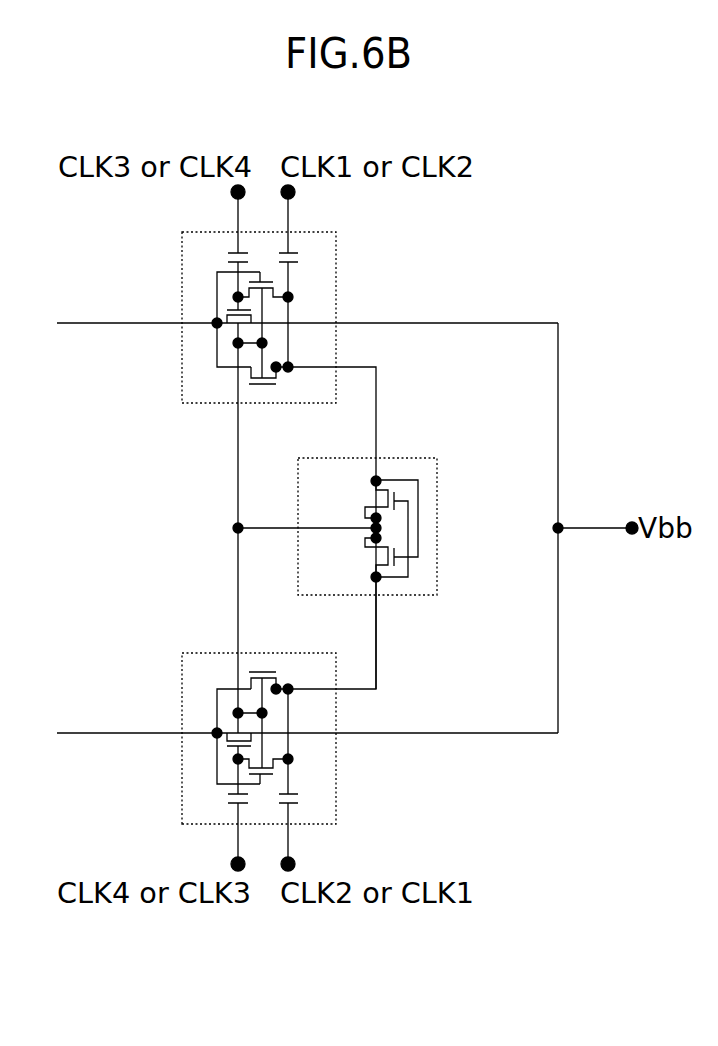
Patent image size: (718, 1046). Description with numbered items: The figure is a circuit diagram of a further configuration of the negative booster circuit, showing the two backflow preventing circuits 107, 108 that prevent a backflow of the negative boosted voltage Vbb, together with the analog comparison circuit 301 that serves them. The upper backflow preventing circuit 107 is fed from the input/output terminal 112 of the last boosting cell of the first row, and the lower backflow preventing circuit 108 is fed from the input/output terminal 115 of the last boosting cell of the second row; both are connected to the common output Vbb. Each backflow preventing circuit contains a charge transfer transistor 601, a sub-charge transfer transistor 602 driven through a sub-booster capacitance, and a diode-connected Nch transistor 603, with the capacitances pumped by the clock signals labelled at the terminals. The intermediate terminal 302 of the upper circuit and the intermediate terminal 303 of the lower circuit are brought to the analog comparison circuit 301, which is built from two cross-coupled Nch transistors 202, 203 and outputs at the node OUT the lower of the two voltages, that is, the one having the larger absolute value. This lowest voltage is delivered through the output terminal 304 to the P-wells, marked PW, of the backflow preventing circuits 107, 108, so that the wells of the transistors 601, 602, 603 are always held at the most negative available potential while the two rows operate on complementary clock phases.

The backflow preventing circuit 107 is at (336, 260).
The backflow preventing circuit 108 is at (336, 806).
The input/output terminal 112 is at (95, 325).
The input/output terminal 115 is at (95, 731).
The Nch transistor 202 is at (395, 493).
The Nch transistor 203 is at (397, 564).
The analog comparison circuit 301 is at (426, 458).
The intermediate terminal 302 is at (378, 372).
The intermediate terminal 303 is at (378, 690).
The output terminal 304 is at (234, 528).
The charge transfer transistor 601 is at (224, 308).
The sub-charge transfer transistor 602 is at (263, 280).
The diode-connected Nch transistor 603 is at (253, 384).